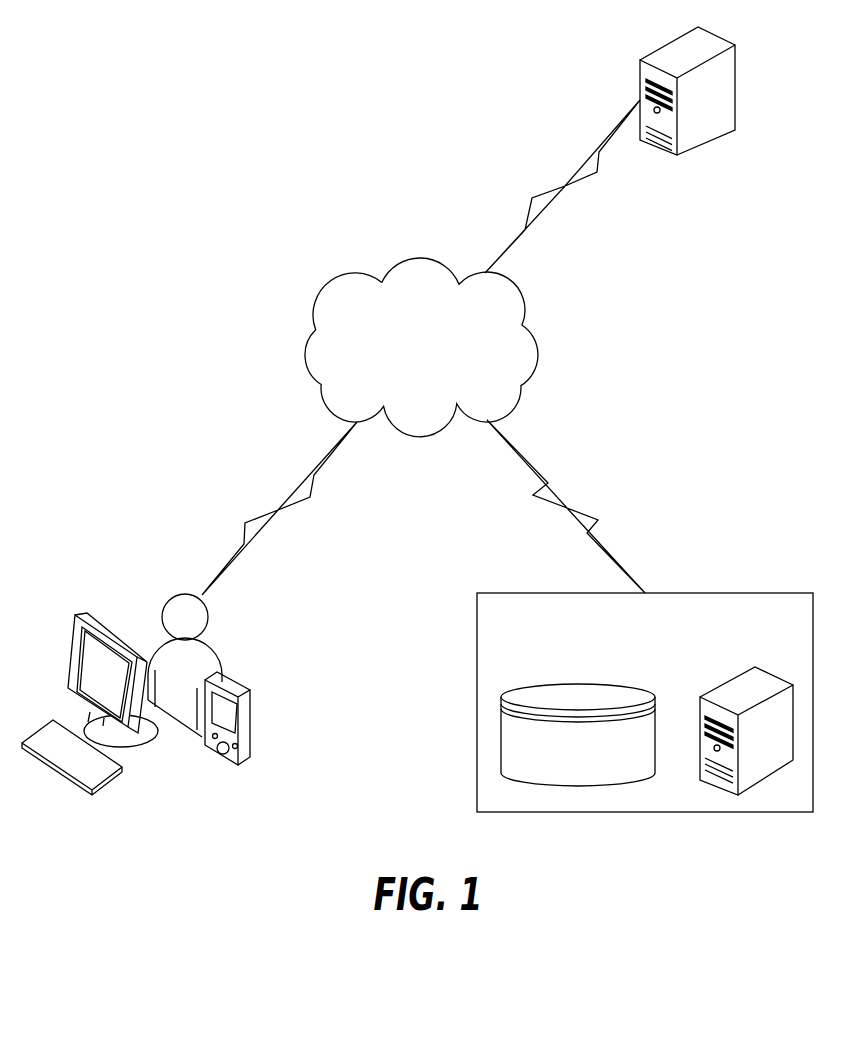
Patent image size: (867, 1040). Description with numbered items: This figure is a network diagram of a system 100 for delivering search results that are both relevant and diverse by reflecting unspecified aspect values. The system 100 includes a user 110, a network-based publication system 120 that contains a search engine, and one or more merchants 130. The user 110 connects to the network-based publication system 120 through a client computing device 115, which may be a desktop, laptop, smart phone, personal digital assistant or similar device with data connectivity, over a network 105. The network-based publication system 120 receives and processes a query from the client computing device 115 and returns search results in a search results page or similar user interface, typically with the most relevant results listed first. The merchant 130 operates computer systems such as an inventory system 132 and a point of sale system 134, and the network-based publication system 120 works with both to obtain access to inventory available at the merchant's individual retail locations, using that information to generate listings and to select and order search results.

The system 100 is at (162, 121).
The network 105 is at (352, 276).
The user 110 is at (167, 605).
The client computing device 115 is at (253, 725).
The network-based publication system 120 is at (668, 42).
The merchant 130 is at (718, 593).
The inventory system 132 is at (577, 684).
The Point of Sale (POS) system 134 is at (732, 678).